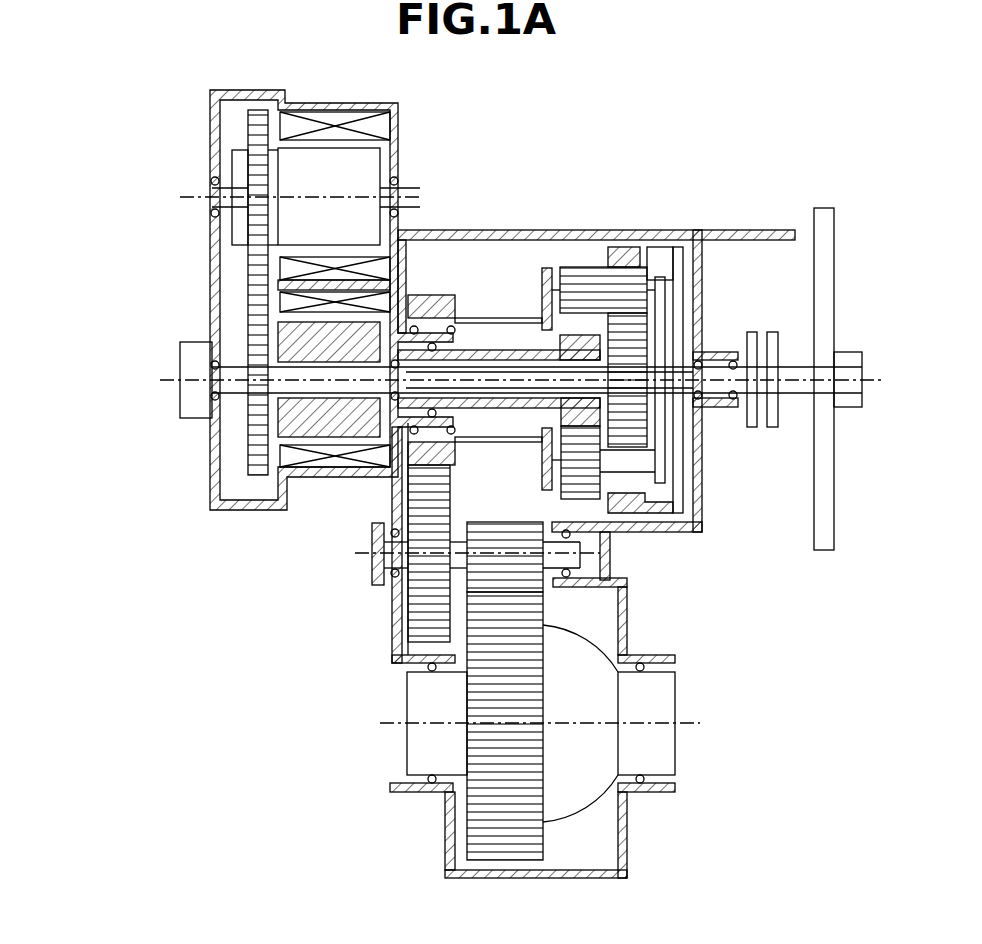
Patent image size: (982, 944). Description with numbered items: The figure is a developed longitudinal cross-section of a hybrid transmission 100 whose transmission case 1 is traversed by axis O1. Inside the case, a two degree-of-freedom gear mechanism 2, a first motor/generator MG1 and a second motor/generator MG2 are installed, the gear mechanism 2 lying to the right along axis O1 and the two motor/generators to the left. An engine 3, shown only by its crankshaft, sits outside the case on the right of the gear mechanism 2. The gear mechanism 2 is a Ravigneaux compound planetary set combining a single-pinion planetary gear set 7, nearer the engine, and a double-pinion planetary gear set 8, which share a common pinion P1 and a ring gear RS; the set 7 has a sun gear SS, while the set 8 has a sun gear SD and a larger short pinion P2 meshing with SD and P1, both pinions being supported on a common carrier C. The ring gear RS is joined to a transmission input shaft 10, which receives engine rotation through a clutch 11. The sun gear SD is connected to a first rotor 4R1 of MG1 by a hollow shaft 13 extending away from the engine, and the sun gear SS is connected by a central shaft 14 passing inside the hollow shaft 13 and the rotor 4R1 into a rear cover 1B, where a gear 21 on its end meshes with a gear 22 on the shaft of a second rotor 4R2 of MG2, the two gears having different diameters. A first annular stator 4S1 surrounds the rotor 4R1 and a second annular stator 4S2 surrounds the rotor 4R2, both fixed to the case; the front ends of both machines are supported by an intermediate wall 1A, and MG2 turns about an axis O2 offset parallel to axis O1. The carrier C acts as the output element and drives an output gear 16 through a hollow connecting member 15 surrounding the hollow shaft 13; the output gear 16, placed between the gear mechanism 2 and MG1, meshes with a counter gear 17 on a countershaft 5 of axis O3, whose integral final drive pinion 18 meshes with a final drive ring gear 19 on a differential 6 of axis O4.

The hybrid transmission 100 is at (575, 160).
The transmission case 1 is at (512, 222).
The intermediate wall 1A is at (405, 228).
The rear cover 1B is at (210, 252).
The two degree-of-freedom gear mechanism 2 is at (623, 325).
The engine 3 is at (850, 408).
The countershaft 5 is at (580, 543).
The differential 6 is at (594, 637).
The single-pinion planetary gear set 7 is at (634, 234).
The double-pinion planetary gear set 8 is at (580, 252).
The transmission input shaft 10 is at (713, 372).
The clutch 11 is at (765, 332).
The hollow shaft 13 is at (523, 350).
The central shaft 14 is at (480, 375).
The hollow connecting member 15 is at (470, 318).
The output gear 16 is at (430, 295).
The counter gear 17 is at (417, 490).
The final drive pinion 18 is at (530, 563).
The final drive ring gear 19 is at (530, 620).
The gear 21 is at (250, 275).
The gear 22 is at (250, 235).
The first motor/generator MG1 is at (227, 375).
The second motor/generator MG2 is at (227, 187).
The first annular stator 4S1 is at (288, 300).
The first rotor 4R1 is at (298, 342).
The second annular stator 4S2 is at (288, 123).
The second rotor 4R2 is at (285, 173).
The axis O1 is at (873, 380).
The axis O2 is at (422, 197).
The axis O3 is at (372, 556).
The axis O4 is at (388, 723).
The common pinion P1 is at (637, 278).
The short pinion P2 is at (568, 490).
The ring gear RS is at (645, 258).
The sun gear SS is at (635, 337).
The sun gear SD is at (553, 455).
The carrier C is at (660, 448).